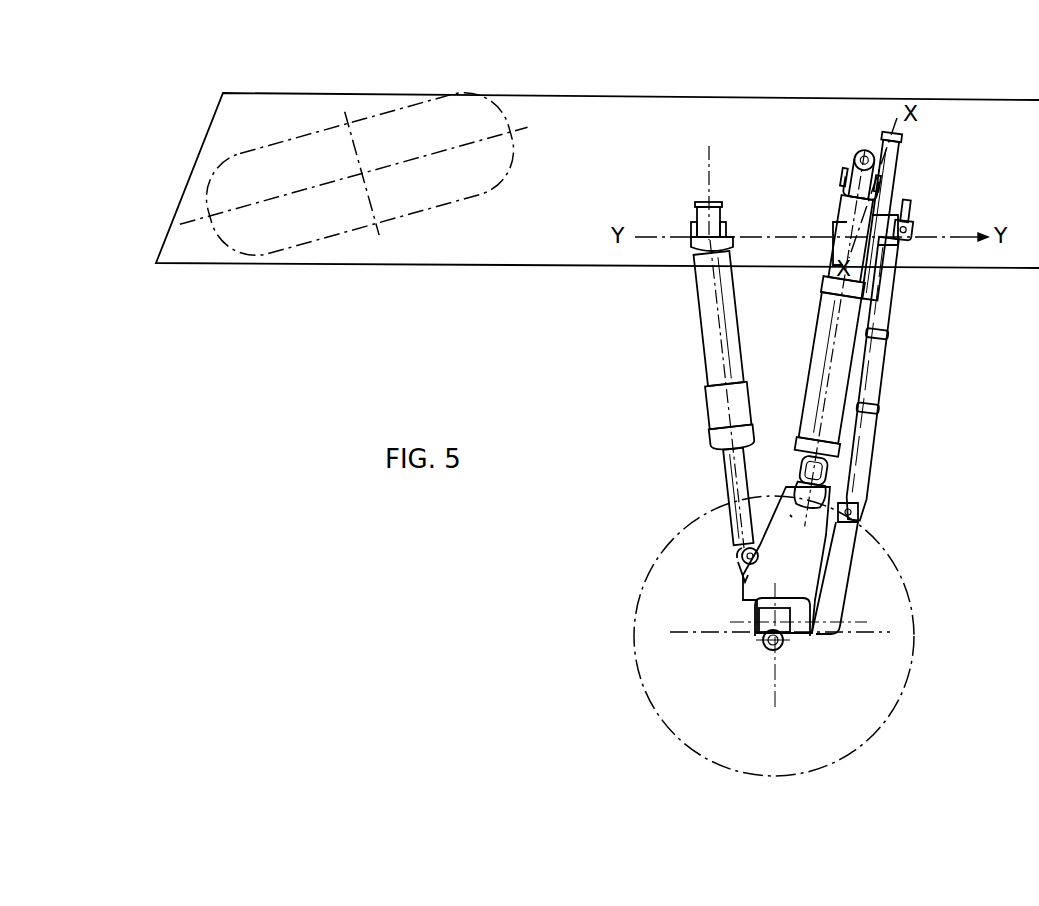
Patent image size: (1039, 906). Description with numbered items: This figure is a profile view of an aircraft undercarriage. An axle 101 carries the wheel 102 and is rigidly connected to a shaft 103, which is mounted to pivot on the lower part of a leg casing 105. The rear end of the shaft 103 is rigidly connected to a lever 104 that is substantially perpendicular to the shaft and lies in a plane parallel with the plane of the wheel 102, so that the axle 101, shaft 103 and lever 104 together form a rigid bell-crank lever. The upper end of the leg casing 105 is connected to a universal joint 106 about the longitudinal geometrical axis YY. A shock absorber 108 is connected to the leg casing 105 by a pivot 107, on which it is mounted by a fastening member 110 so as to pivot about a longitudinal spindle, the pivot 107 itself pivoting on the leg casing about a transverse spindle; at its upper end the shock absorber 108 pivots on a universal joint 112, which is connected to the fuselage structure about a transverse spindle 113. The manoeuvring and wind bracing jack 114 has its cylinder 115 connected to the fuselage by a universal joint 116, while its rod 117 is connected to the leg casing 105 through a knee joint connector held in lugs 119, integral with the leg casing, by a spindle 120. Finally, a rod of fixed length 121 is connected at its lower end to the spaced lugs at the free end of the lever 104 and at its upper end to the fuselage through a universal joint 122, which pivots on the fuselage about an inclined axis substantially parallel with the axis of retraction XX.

The axle 101 is at (773, 645).
The wheel 102 is at (897, 607).
The shaft 103 is at (800, 636).
The lever 104 is at (833, 586).
The leg casing 105 is at (792, 517).
The universal joint 106 is at (893, 162).
The pivot 107 is at (845, 472).
The shock absorber 108 is at (856, 320).
The fastening member 110 is at (835, 485).
The universal joint 112 is at (853, 180).
The transverse spindle 113 is at (858, 152).
The manoeuvring and wind bracing jack 114 is at (684, 352).
The cylinder 115 is at (712, 311).
The universal joint 116 is at (708, 217).
The rod 117 is at (735, 482).
The lugs 119 is at (740, 575).
The spindle 120 is at (742, 556).
The rod of fixed length 121 is at (921, 351).
The universal joint 122 is at (908, 218).